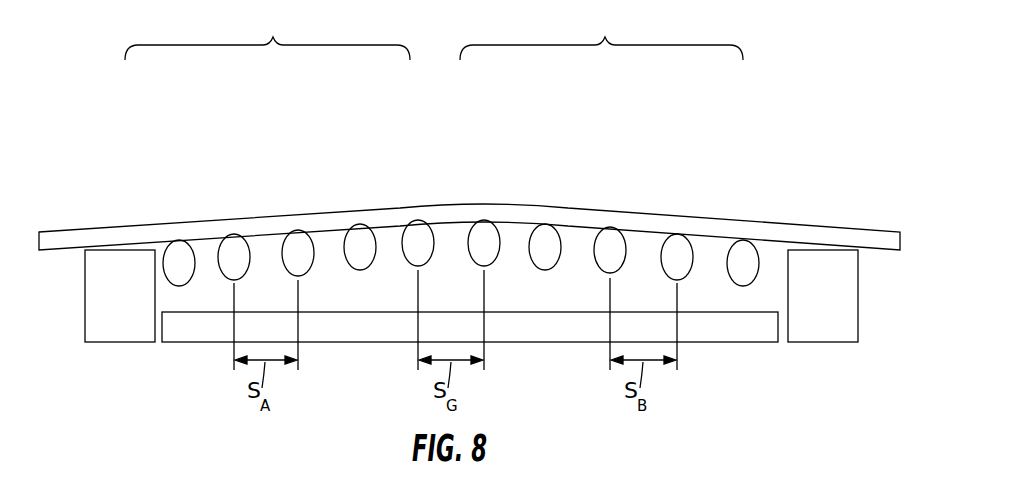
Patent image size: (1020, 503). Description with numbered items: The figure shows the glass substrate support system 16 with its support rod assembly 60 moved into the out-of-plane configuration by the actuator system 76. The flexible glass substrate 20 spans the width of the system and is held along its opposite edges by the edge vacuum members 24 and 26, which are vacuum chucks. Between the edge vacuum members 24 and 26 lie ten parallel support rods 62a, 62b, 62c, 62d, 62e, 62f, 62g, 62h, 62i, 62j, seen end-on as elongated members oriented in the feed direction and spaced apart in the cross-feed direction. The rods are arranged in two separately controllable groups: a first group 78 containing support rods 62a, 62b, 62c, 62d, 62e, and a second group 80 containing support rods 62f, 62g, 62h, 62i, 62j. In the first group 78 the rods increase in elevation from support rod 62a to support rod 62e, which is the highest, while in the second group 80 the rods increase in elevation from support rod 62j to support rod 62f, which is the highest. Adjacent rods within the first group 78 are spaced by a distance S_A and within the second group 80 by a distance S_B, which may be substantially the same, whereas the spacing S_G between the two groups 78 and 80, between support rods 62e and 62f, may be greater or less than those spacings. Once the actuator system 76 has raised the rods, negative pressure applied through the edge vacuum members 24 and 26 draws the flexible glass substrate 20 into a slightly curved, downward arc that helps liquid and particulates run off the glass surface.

The glass substrate support system 16 is at (645, 150).
The flexible glass substrate 20 is at (797, 233).
The edge vacuum member 24 is at (75, 313).
The edge vacuum member 26 is at (880, 333).
The support rod assembly 60 is at (767, 268).
The support rod 62a is at (180, 258).
The support rod 62b is at (235, 253).
The support rod 62c is at (299, 249).
The support rod 62d is at (360, 243).
The support rod 62e is at (418, 239).
The support rod 62f is at (484, 239).
The support rod 62g is at (545, 243).
The support rod 62h is at (610, 246).
The support rod 62i is at (677, 253).
The support rod 62j is at (743, 259).
The actuator system 76 is at (711, 331).
The first group 78 is at (267, 34).
The second group 80 is at (601, 34).